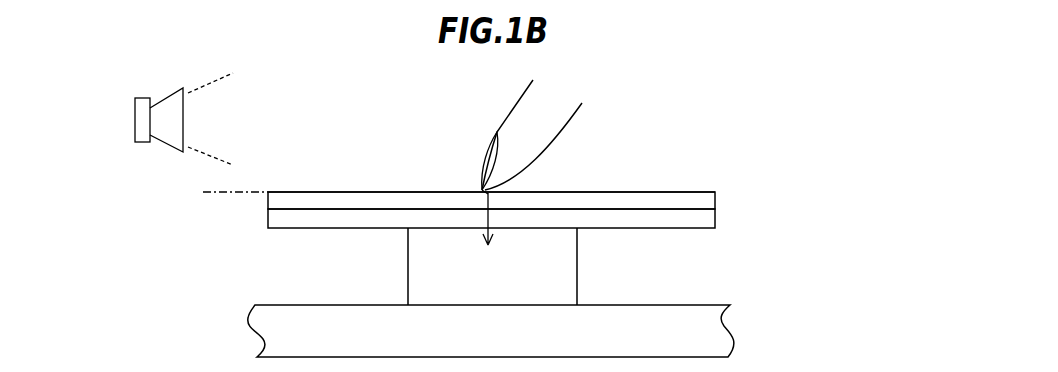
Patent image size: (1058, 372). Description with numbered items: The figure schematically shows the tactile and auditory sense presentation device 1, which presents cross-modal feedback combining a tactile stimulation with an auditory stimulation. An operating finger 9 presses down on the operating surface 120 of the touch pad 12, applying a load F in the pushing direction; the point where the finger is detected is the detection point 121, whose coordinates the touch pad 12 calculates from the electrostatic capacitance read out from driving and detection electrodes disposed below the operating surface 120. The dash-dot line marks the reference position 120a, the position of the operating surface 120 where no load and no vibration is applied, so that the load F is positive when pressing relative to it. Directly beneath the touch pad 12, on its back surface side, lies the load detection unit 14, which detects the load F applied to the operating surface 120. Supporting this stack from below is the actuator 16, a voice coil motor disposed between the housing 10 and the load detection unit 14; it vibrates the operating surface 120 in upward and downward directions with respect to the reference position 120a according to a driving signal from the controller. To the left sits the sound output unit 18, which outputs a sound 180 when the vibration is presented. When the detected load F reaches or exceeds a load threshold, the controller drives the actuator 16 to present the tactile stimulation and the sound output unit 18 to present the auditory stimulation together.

The tactile and auditory sense presentation device 1 is at (770, 94).
The operating finger 9 is at (538, 140).
The detection point 121 is at (478, 185).
The operating surface 120 is at (347, 190).
The reference position 120a is at (208, 190).
The touch pad 12 is at (705, 202).
The load detection unit 14 is at (705, 222).
The actuator 16 is at (565, 278).
The housing 10 is at (710, 332).
The sound output unit 18 is at (155, 125).
The sound 180 is at (212, 85).